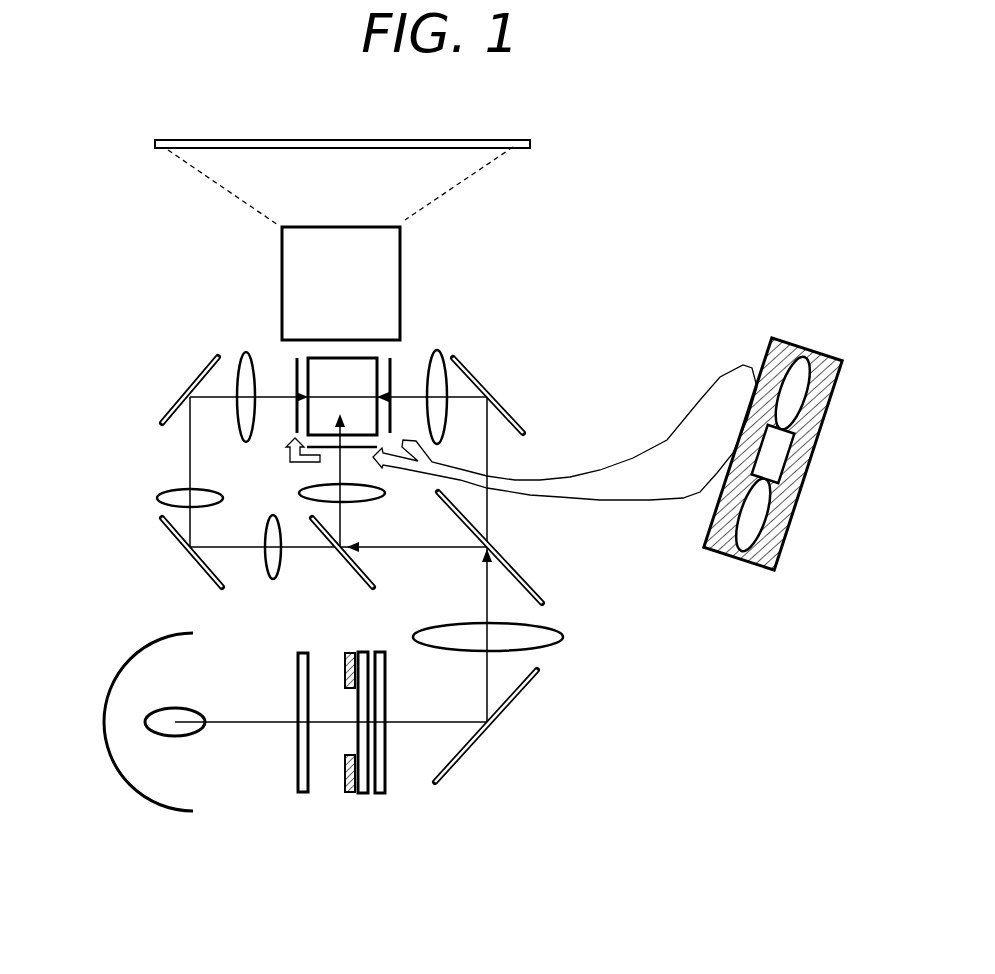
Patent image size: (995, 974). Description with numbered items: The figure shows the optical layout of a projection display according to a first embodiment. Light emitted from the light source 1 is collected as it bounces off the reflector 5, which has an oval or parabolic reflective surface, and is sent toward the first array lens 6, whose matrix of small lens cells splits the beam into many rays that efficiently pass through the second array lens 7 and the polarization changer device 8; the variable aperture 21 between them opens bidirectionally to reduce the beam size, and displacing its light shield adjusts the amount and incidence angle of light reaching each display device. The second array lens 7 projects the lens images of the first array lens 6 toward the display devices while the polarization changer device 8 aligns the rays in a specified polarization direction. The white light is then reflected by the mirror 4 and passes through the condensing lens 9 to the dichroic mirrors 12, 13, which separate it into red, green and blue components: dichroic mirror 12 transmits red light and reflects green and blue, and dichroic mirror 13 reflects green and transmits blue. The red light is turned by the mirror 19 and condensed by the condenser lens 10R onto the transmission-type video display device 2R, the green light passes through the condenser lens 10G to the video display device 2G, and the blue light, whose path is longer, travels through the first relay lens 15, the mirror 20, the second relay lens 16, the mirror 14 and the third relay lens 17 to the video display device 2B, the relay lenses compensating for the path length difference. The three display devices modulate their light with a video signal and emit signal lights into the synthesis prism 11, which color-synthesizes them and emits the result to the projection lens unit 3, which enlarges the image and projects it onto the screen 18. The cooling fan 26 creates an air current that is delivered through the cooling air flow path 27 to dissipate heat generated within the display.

The light source 1 is at (155, 718).
The reflector 5 is at (120, 773).
The first array lens 6 is at (300, 782).
The variable aperture 21 is at (346, 782).
The second array lens 7 is at (360, 793).
The polarization changer device 8 is at (386, 782).
The mirror 4 is at (510, 706).
The condensing lens 9 is at (540, 636).
The dichroic mirror 12 is at (518, 568).
The dichroic mirror 13 is at (338, 566).
The mirror 14 is at (200, 387).
The first relay lens 15 is at (270, 578).
The second relay lens 16 is at (165, 494).
The third relay lens 17 is at (240, 356).
The mirror 19 is at (488, 382).
The mirror 20 is at (168, 535).
The condenser lens 10G is at (300, 491).
The condenser lens 10R is at (441, 352).
The transmission-type video display device 2B is at (297, 368).
The transmission-type video display device 2G is at (320, 448).
The transmission-type video display device 2R is at (392, 360).
The synthesis prism 11 is at (312, 358).
The projection lens unit 3 is at (375, 262).
The screen 18 is at (450, 146).
The cooling fan 26 is at (780, 350).
The cooling air flow path 27 is at (707, 397).